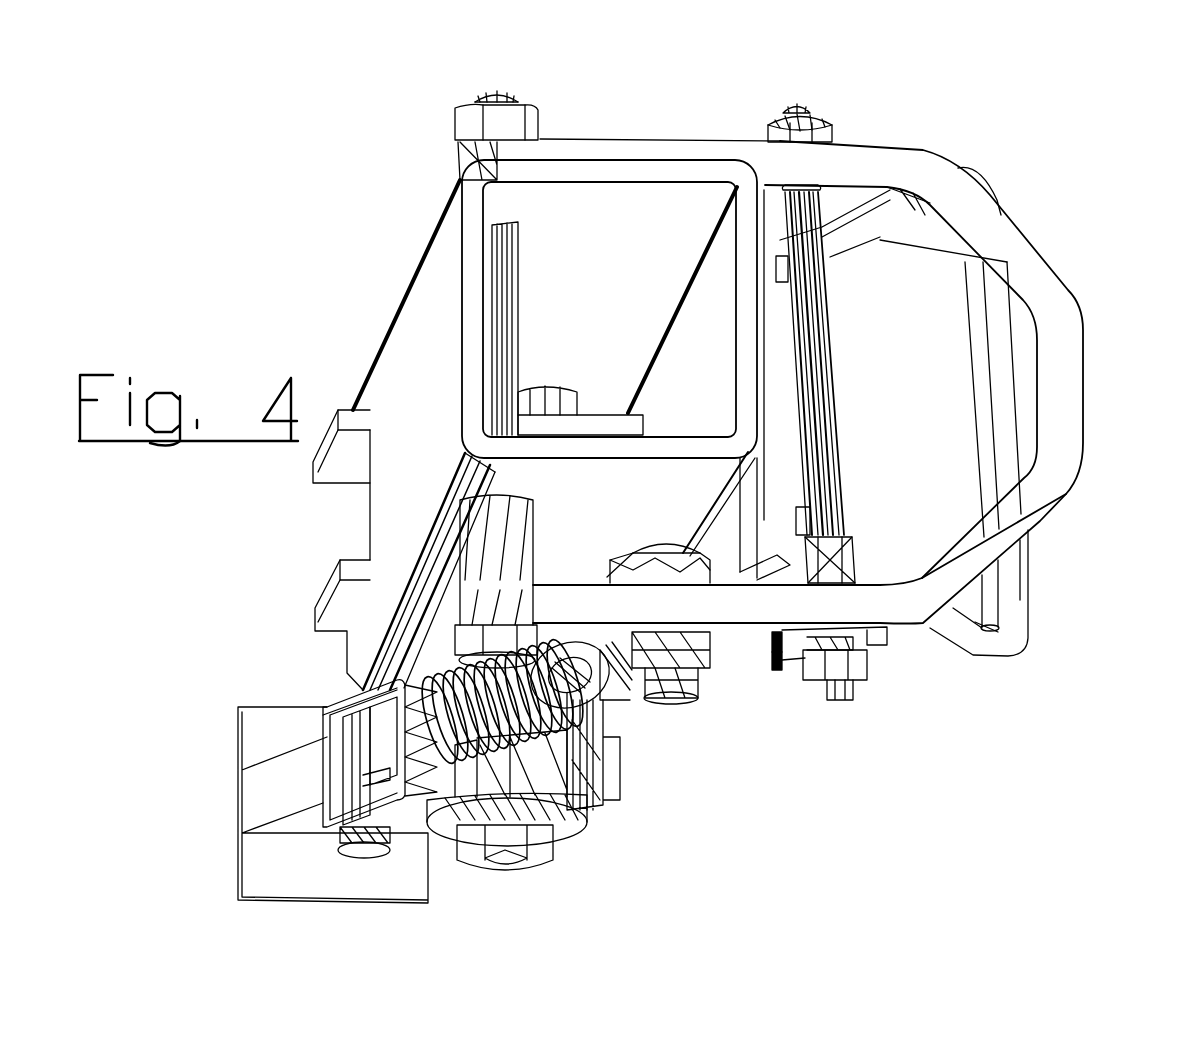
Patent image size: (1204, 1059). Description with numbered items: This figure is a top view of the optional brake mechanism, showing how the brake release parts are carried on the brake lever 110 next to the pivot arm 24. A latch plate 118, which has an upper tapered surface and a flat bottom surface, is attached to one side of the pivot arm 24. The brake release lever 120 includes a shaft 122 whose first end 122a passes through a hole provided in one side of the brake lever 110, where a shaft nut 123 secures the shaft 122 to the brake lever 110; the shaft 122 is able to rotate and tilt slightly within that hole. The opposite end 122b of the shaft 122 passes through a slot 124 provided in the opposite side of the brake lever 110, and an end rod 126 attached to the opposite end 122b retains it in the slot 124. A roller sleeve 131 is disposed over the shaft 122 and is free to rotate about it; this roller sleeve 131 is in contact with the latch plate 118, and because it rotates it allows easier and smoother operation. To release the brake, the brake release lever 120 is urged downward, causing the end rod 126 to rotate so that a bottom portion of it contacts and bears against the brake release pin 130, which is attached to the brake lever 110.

The pivot arm 24 is at (460, 307).
The brake lever 110 is at (1083, 388).
The latch plate 118 is at (789, 450).
The brake release lever 120 is at (1030, 623).
The shaft 122 is at (830, 352).
The first end 122a is at (802, 103).
The opposite end 122b is at (840, 700).
The shaft nut 123 is at (835, 123).
The slot 124 is at (773, 643).
The end rod 126 is at (883, 643).
The brake release pin 130 is at (777, 667).
The roller sleeve 131 is at (857, 567).